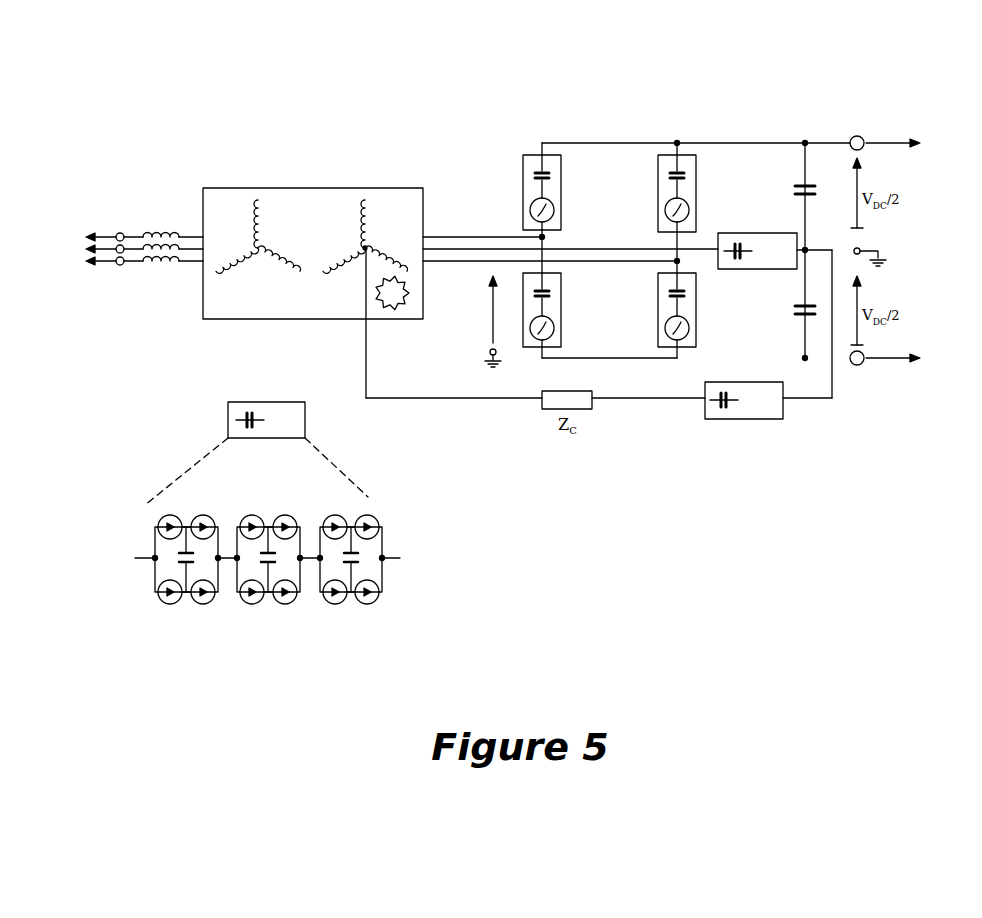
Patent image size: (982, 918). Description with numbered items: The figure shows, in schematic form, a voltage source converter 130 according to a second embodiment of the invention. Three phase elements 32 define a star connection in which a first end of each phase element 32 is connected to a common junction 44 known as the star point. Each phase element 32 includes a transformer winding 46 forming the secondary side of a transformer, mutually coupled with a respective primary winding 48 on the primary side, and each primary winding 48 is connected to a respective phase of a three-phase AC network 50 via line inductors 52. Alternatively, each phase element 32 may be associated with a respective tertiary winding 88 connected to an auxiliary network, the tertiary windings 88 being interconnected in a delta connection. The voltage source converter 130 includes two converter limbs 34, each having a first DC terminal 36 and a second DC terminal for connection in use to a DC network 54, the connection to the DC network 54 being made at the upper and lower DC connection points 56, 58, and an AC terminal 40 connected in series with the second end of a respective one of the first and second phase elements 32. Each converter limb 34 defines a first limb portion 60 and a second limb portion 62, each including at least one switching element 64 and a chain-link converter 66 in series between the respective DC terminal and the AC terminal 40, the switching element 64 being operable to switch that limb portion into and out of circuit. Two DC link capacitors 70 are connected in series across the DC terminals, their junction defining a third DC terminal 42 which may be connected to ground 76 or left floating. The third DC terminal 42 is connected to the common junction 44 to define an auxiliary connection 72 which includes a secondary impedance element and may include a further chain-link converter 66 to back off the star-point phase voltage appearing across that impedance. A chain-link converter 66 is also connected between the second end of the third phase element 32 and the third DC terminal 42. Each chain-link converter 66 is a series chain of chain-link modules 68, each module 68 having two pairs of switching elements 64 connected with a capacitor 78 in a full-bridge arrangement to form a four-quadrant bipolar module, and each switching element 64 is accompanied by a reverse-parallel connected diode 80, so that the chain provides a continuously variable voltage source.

The voltage source converter 130 is at (348, 84).
The three-phase AC network 50 is at (87, 248).
The line inductors 52 is at (181, 233).
The phase element 32 is at (365, 202).
The primary winding 48 is at (278, 250).
The transformer winding 46 is at (400, 262).
The common junction 44 is at (363, 247).
The tertiary winding 88 is at (395, 311).
The converter limb 34 is at (540, 104).
The first DC terminal 36 is at (677, 140).
The first limb portion 60 is at (522, 168).
The second limb portion 62 is at (657, 314).
The AC terminal 40 is at (548, 238).
The DC link capacitor 70 is at (797, 190).
The third DC terminal 42 is at (810, 249).
The positive DC terminal 56 is at (857, 128).
The DC network 54 is at (910, 251).
The ground 76 is at (890, 257).
The negative DC terminal 58 is at (858, 367).
The chain-link converter 66 is at (760, 262).
The auxiliary connection 72 is at (652, 400).
The chain-link module 68 is at (345, 610).
The switching element 64 is at (301, 532).
The capacitor 78 is at (385, 546).
The reverse-parallel connected diode 80 is at (212, 519).